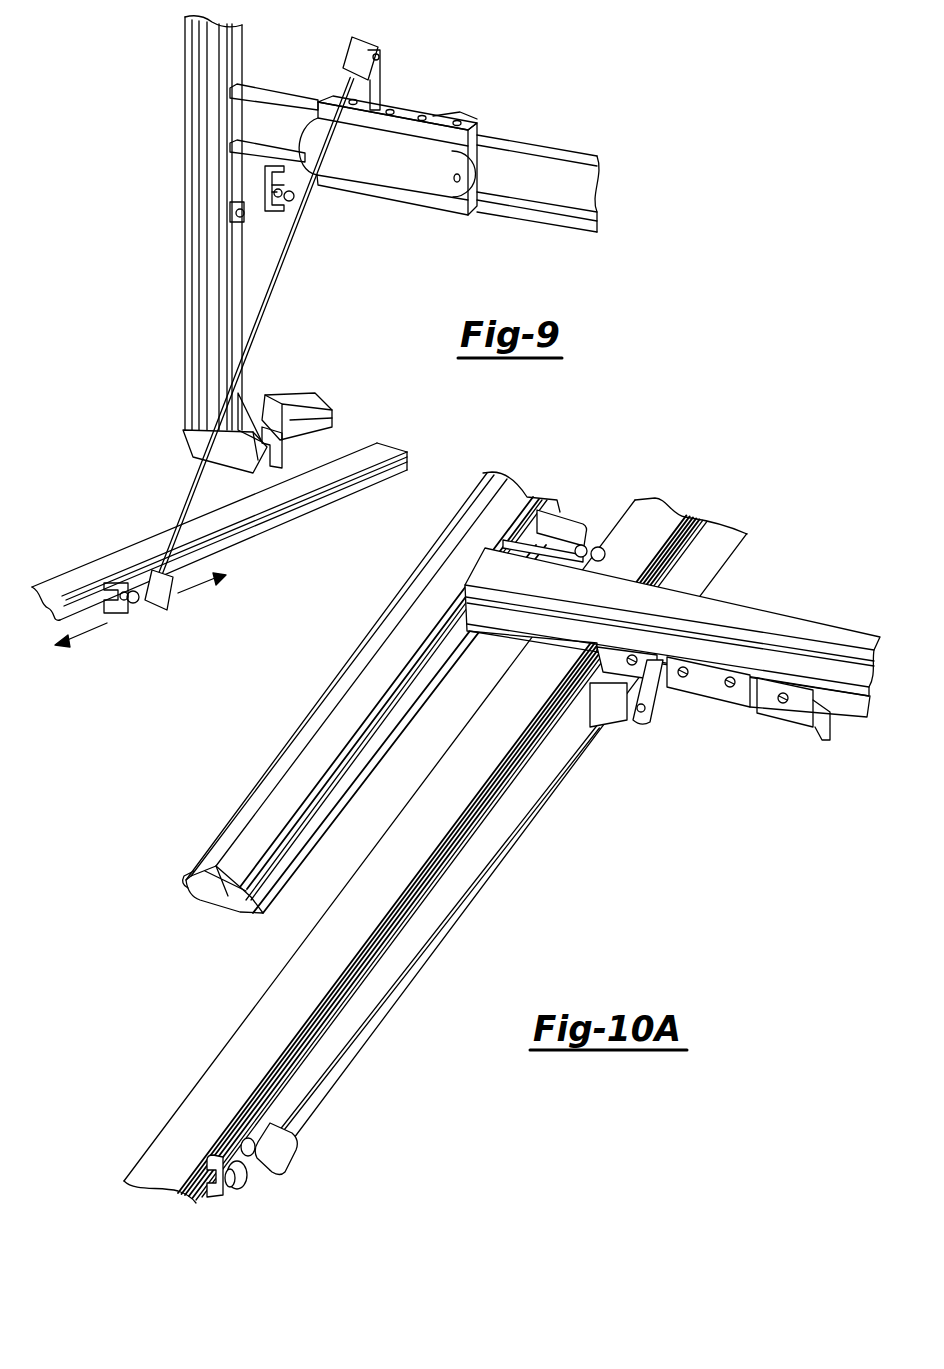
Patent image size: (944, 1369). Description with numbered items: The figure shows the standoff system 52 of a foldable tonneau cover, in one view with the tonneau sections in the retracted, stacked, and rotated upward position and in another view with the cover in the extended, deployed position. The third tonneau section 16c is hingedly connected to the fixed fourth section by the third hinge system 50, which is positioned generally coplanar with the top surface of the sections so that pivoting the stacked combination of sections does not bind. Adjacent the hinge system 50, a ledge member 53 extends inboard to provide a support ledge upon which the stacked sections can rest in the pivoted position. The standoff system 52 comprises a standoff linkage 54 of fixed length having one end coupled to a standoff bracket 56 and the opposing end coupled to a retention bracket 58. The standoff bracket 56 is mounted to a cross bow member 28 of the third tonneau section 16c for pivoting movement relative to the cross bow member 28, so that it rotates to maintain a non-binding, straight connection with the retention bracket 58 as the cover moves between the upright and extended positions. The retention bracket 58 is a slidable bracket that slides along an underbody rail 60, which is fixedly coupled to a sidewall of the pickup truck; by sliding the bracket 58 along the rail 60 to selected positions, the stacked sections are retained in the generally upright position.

In FIG. 9, the third tonneau section 16c is at (185, 130).
In FIG. 10A, the third tonneau section 16c is at (240, 808).
In FIG. 9, the cross bow member 28 is at (547, 145).
In FIG. 10A, the cross bow member 28 is at (692, 610).
In FIG. 9, the third hinge system 50 is at (183, 452).
In FIG. 9, the standoff system 52 is at (146, 279).
In FIG. 9, the ledge member 53 is at (312, 428).
In FIG. 9, the standoff linkage 54 is at (273, 296).
In FIG. 10A, the standoff linkage 54 is at (447, 930).
In FIG. 9, the standoff bracket 56 is at (350, 44).
In FIG. 10A, the standoff bracket 56 is at (665, 714).
In FIG. 9, the retention bracket 58 is at (123, 605).
In FIG. 10A, the retention bracket 58 is at (248, 1185).
In FIG. 9, the underbody rail 60 is at (248, 537).
In FIG. 10A, the underbody rail 60 is at (222, 1068).